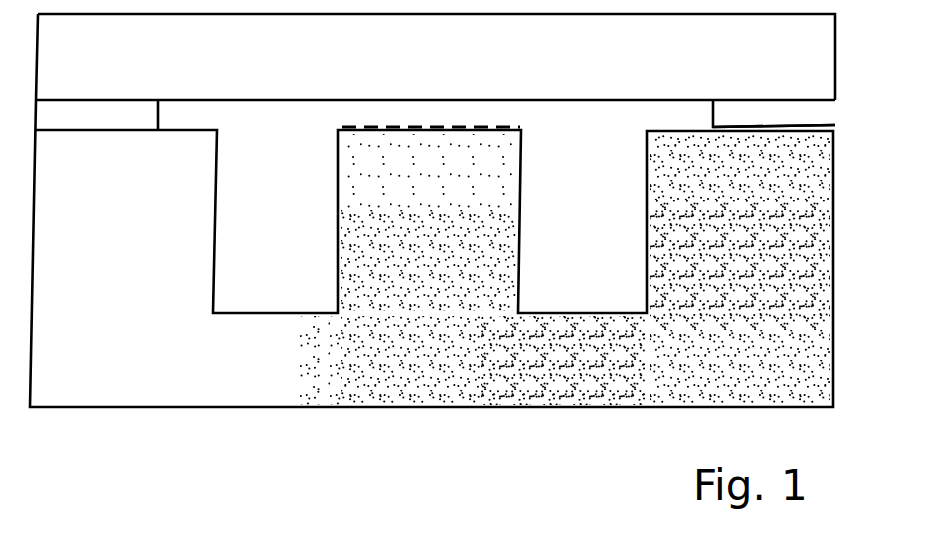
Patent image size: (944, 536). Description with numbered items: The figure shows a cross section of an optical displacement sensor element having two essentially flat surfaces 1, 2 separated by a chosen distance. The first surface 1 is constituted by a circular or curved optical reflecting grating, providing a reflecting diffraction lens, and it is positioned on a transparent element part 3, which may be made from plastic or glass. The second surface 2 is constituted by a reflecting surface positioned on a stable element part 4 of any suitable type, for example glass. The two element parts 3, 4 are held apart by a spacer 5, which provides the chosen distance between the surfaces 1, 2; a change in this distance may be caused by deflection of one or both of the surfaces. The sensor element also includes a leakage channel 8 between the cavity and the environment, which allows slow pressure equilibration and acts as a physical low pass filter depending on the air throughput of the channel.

The first surface 1 is at (430, 132).
The second surface 2 is at (441, 99).
The transparent element part 3 is at (431, 253).
The stable element part 4 is at (435, 57).
The spacer 5 is at (96, 115).
The leakage channel 8 is at (836, 128).